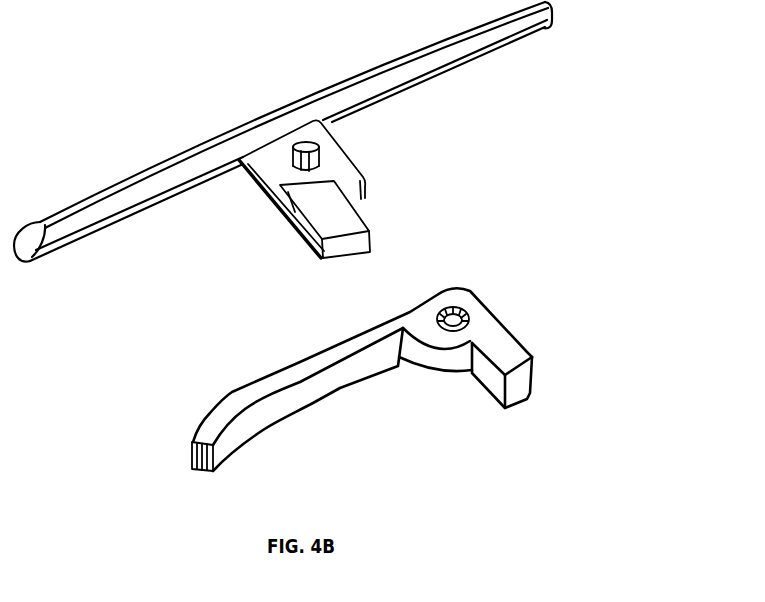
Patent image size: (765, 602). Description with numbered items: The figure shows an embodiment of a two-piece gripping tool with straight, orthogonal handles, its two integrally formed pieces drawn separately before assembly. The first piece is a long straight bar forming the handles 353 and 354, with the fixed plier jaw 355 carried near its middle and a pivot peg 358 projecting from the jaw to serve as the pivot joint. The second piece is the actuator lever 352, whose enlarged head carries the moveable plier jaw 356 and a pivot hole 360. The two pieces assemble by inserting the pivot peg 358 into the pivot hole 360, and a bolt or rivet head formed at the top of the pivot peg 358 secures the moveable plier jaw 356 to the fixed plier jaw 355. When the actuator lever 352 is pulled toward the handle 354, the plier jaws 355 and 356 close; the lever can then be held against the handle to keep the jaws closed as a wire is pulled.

The actuator lever 352 is at (290, 408).
The handle 353 is at (487, 36).
The handle 354 is at (75, 218).
The fixed plier jaw 355 is at (350, 222).
The moveable plier jaw 356 is at (524, 357).
The pivot peg 358 is at (313, 150).
The pivot hole 360 is at (463, 313).